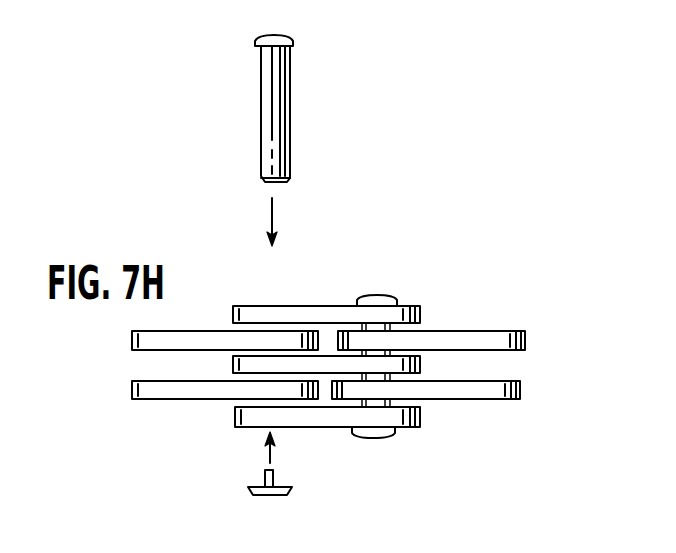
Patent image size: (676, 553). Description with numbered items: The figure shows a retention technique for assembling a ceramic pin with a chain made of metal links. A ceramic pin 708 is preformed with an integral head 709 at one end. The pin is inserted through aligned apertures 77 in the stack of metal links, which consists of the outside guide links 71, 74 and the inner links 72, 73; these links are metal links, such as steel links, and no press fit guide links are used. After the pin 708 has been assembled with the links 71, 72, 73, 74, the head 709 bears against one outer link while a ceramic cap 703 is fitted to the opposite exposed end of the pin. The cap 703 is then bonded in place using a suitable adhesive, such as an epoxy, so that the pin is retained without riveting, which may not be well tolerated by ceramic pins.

The ceramic pin 708 is at (258, 96).
The integral head 709 is at (296, 36).
The aperture 77 is at (265, 302).
The outside guide link 71 is at (318, 303).
The inner link 72 is at (527, 341).
The inner link 73 is at (522, 391).
The outside guide link 74 is at (420, 418).
The ceramic cap 703 is at (292, 497).